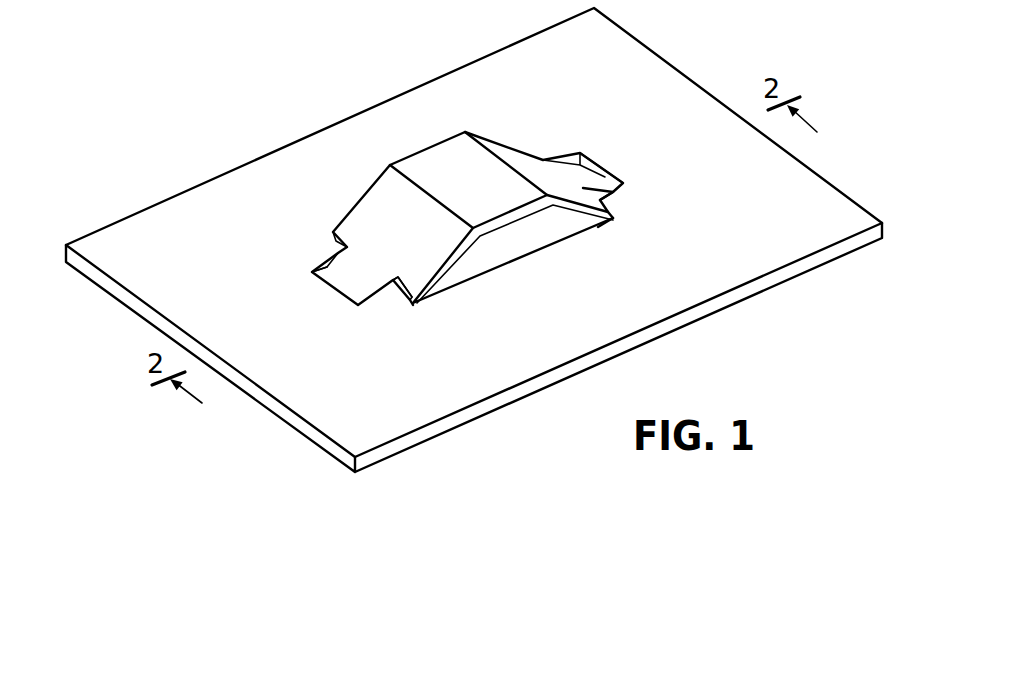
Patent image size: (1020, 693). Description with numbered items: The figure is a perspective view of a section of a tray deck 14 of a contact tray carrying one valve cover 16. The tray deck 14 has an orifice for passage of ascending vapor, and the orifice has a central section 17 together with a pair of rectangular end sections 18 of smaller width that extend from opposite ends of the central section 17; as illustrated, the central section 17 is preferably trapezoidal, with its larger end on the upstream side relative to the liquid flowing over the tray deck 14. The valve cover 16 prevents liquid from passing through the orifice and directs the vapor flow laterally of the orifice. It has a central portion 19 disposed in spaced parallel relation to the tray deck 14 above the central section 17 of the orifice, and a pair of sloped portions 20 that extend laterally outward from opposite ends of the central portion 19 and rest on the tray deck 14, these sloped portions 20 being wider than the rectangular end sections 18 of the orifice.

The tray deck 14 is at (220, 192).
The valve cover 16 is at (480, 187).
The central section 17 is at (513, 248).
The rectangular end sections 18 is at (338, 285).
The central portion 19 is at (430, 167).
The sloped portions 20 is at (355, 228).